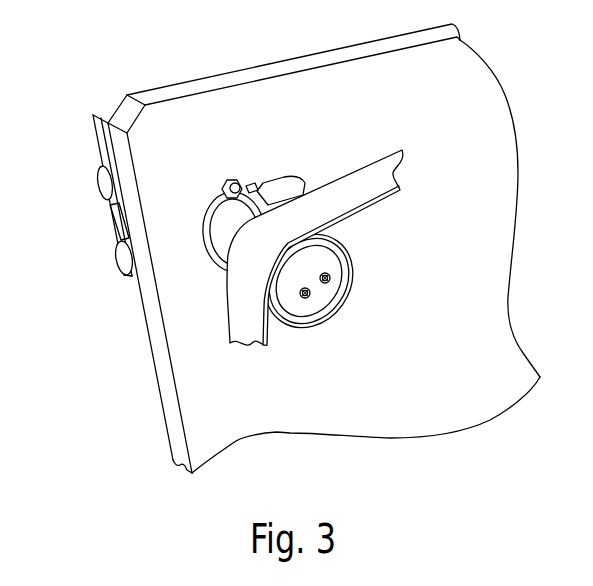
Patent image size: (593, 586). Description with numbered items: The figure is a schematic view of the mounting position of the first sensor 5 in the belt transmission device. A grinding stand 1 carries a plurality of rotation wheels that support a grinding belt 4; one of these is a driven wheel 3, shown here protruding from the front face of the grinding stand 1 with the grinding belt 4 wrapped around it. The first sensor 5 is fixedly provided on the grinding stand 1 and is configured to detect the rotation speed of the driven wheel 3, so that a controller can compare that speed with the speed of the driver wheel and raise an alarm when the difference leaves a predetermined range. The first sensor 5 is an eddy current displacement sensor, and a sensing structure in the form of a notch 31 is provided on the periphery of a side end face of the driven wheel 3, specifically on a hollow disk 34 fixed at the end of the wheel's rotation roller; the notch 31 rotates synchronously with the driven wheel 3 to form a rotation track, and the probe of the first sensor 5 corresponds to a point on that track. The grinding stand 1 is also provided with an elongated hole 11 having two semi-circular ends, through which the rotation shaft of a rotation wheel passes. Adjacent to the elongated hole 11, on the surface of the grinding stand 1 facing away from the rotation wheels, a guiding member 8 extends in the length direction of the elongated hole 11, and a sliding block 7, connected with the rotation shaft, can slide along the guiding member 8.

The grinding stand 1 is at (378, 80).
The driven wheel 3 is at (222, 240).
The grinding belt 4 is at (337, 202).
The first sensor 5 is at (235, 180).
The sliding block 7 is at (100, 140).
The guiding member 8 is at (107, 185).
The elongated hole 11 is at (273, 192).
The notch 31 is at (248, 187).
The hollow disk 34 is at (203, 207).